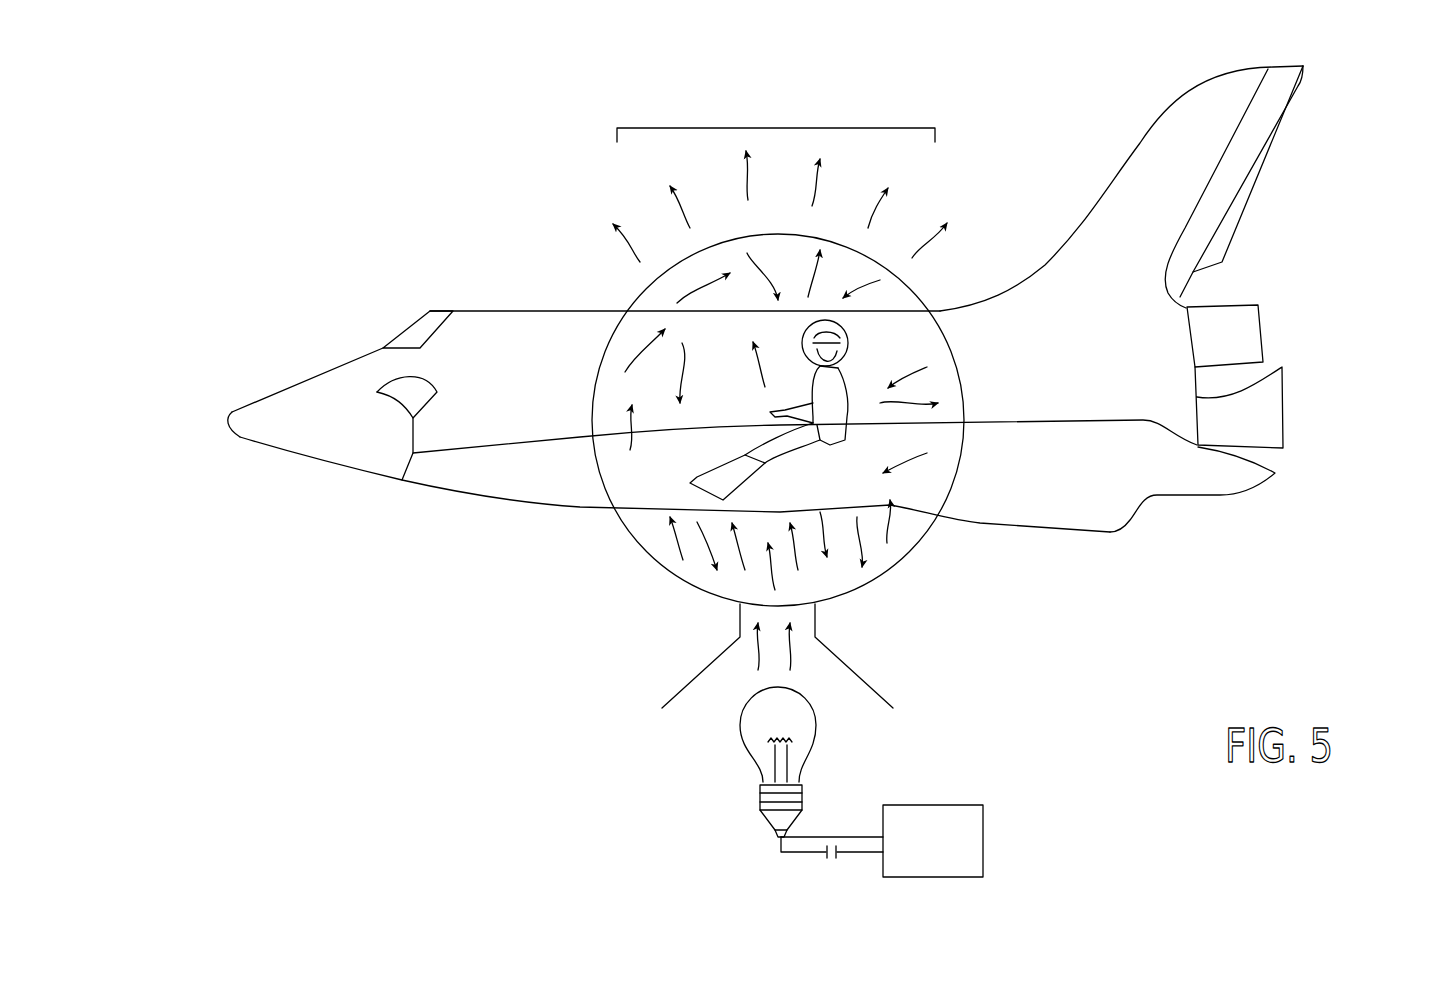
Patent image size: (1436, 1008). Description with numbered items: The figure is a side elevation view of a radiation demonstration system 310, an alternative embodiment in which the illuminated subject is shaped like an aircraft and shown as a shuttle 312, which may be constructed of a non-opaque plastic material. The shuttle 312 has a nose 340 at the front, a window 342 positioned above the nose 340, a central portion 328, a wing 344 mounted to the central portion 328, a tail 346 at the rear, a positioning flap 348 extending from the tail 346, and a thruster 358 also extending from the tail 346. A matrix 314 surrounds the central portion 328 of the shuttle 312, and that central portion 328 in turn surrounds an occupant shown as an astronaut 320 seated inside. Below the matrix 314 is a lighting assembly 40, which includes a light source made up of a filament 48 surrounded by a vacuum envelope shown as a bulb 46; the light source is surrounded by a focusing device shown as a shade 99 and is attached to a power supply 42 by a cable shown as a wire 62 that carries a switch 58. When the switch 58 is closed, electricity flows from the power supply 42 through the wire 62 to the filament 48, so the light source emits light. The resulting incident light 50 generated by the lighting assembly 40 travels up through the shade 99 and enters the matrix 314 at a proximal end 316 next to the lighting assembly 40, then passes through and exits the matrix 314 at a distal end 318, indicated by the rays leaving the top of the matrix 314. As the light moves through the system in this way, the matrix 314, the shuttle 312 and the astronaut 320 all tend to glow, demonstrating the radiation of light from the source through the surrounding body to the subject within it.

The radiation demonstration system 310 is at (365, 153).
The shuttle 312 is at (410, 308).
The matrix 314 is at (960, 373).
The proximal end 316 is at (848, 612).
The distal end 318 is at (850, 237).
The astronaut 320 is at (853, 348).
The central portion 328 is at (780, 125).
The nose 340 is at (255, 388).
The window 342 is at (450, 330).
The wing 344 is at (1127, 530).
The tail 346 is at (1340, 138).
The positioning flap 348 is at (1263, 173).
The thruster 358 is at (1265, 330).
The lighting assembly 40 is at (901, 784).
The power supply 42 is at (983, 837).
The bulb 46 is at (740, 733).
The filament 48 is at (783, 735).
The incident light 50 is at (810, 650).
The switch 58 is at (838, 860).
The wire 62 is at (830, 837).
The shade 99 is at (702, 668).